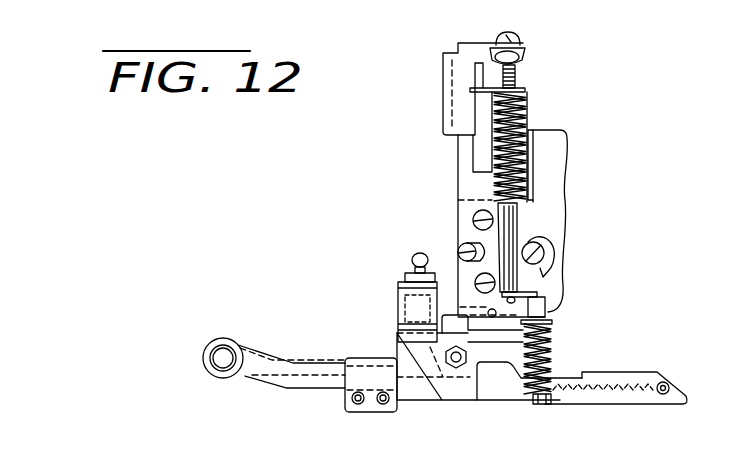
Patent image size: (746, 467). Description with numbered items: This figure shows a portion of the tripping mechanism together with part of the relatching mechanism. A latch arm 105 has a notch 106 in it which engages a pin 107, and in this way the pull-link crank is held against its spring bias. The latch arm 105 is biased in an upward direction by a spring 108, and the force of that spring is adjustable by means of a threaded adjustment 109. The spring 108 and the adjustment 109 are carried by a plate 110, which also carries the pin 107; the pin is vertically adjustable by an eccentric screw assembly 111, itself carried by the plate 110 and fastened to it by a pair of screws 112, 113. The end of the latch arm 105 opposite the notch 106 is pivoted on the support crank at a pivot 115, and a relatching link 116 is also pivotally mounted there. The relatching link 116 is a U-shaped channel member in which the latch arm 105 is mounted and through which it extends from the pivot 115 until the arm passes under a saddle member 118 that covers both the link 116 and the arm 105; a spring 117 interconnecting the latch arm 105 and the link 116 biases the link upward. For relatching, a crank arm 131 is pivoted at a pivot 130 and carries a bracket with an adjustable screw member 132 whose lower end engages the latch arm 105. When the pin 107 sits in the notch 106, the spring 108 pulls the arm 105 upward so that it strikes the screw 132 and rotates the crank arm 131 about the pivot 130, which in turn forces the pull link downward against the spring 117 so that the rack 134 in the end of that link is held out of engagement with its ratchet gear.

The latch arm 105 is at (548, 326).
The notch 106 is at (546, 312).
The pin 107 is at (476, 280).
The spring 108 is at (522, 130).
The threaded adjustment 109 is at (533, 23).
The plate 110 is at (463, 185).
The eccentric screw assembly 111 is at (468, 250).
The screw 112 is at (475, 218).
The screw 113 is at (462, 266).
The pivot 115 is at (225, 362).
The relatching link 116 is at (497, 393).
The spring 117 is at (550, 340).
The saddle member 118 is at (350, 386).
The pivot 130 is at (456, 362).
The crank arm 131 is at (462, 393).
The adjustable screw member 132 is at (405, 267).
The rack 134 is at (612, 393).